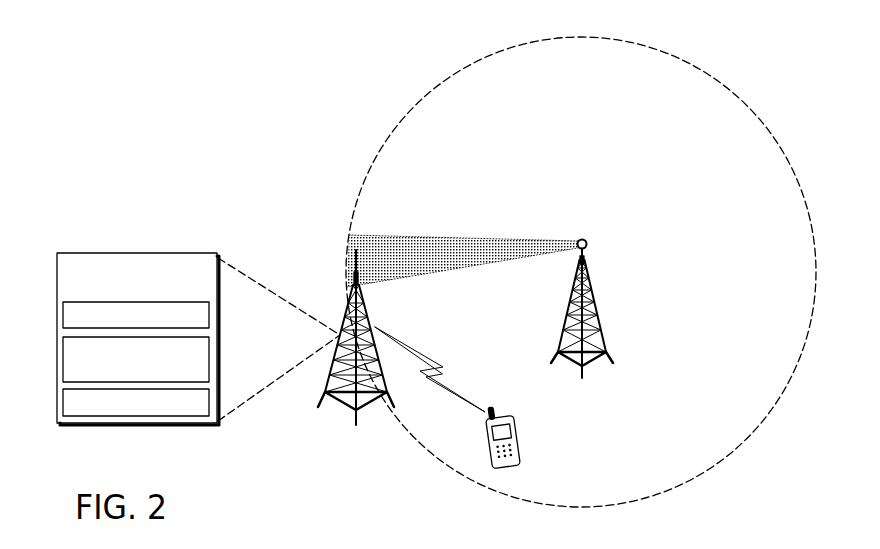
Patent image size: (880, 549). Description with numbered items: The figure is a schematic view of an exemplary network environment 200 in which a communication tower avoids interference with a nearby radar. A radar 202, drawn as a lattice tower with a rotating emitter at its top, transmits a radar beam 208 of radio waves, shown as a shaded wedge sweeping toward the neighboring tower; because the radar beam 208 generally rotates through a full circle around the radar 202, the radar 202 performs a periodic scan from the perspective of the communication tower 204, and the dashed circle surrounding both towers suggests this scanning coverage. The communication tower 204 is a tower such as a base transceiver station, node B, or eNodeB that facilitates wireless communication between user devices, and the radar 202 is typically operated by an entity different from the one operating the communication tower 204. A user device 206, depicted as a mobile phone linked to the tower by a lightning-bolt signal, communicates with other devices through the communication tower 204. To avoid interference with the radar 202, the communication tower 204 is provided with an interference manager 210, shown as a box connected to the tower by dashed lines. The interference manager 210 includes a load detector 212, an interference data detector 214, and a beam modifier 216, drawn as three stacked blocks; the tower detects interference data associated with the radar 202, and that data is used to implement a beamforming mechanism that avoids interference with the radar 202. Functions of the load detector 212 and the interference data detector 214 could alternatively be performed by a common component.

The network environment 200 is at (130, 131).
The radar 202 is at (605, 327).
The communication tower 204 is at (346, 422).
The user device 206 is at (519, 440).
The radar beam 208 is at (479, 240).
The interference manager 210 is at (181, 329).
The load detector 212 is at (63, 317).
The interference data detector 214 is at (63, 356).
The beam modifier 216 is at (63, 403).